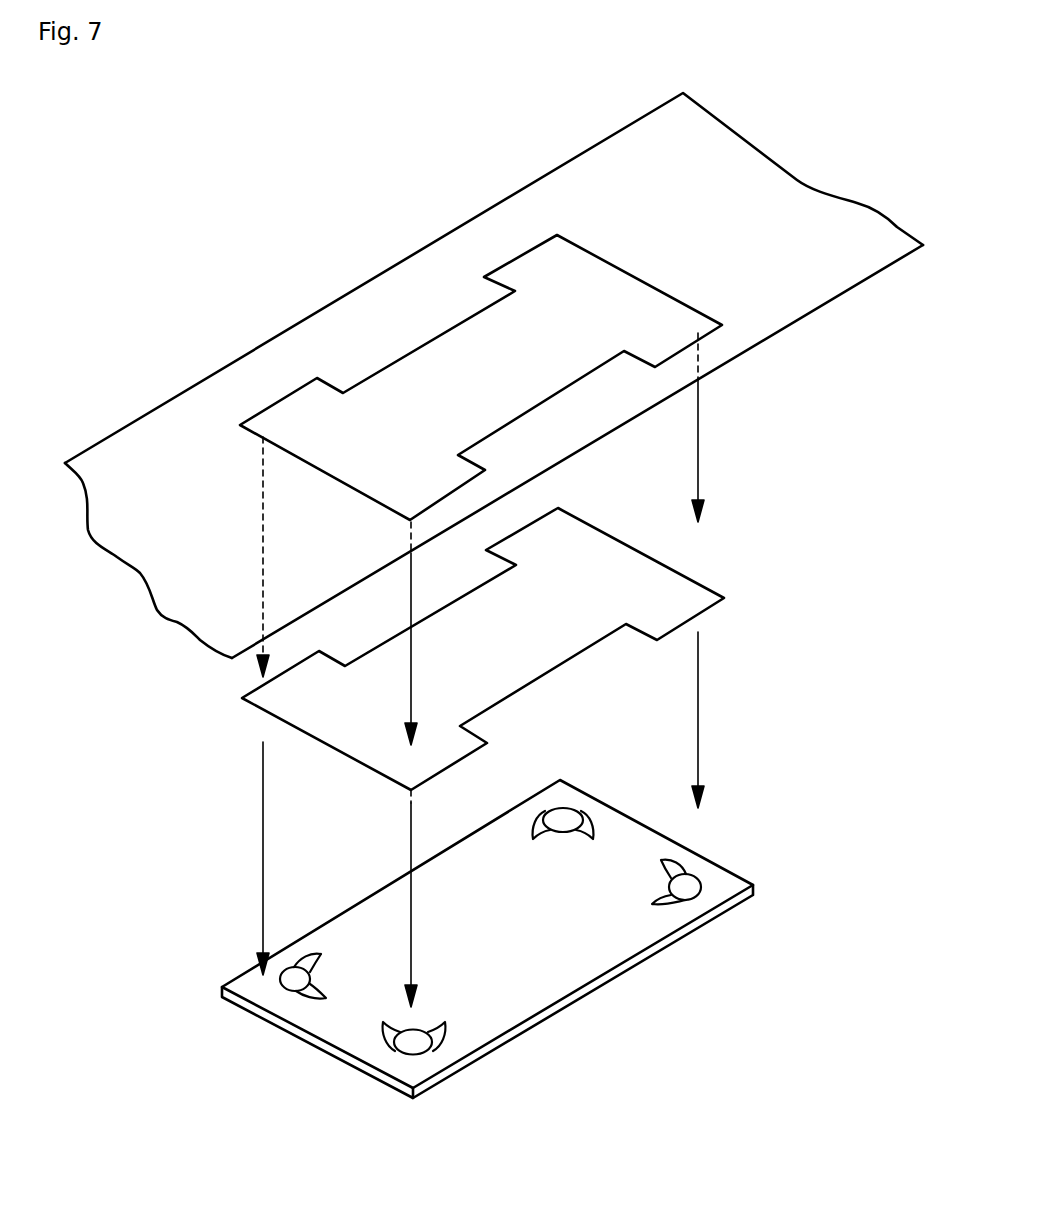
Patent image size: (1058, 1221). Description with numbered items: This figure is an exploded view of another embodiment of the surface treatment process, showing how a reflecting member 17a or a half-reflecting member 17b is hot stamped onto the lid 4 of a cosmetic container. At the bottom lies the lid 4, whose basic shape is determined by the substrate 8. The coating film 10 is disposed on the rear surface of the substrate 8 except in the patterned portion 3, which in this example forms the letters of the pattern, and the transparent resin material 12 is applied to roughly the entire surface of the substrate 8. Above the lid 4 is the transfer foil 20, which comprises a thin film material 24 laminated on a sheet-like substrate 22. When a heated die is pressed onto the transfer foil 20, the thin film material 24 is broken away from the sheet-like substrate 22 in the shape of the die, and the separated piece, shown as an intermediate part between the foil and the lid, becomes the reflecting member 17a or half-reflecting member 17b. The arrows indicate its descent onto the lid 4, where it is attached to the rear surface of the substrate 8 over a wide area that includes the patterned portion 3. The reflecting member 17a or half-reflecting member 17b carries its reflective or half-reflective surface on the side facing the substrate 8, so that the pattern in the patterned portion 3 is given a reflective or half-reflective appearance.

The transfer foil 20 is at (494, 375).
The sheet-like substrate 22 is at (775, 337).
The thin film material 24 is at (695, 325).
The reflecting member 17a is at (567, 649).
The half-reflecting member 17b is at (688, 598).
The coating film 10 is at (501, 941).
The transparent resin material 12 is at (620, 830).
The substrate 8 is at (732, 902).
The lid 4 is at (348, 1038).
The patterned portion 3 is at (690, 890).